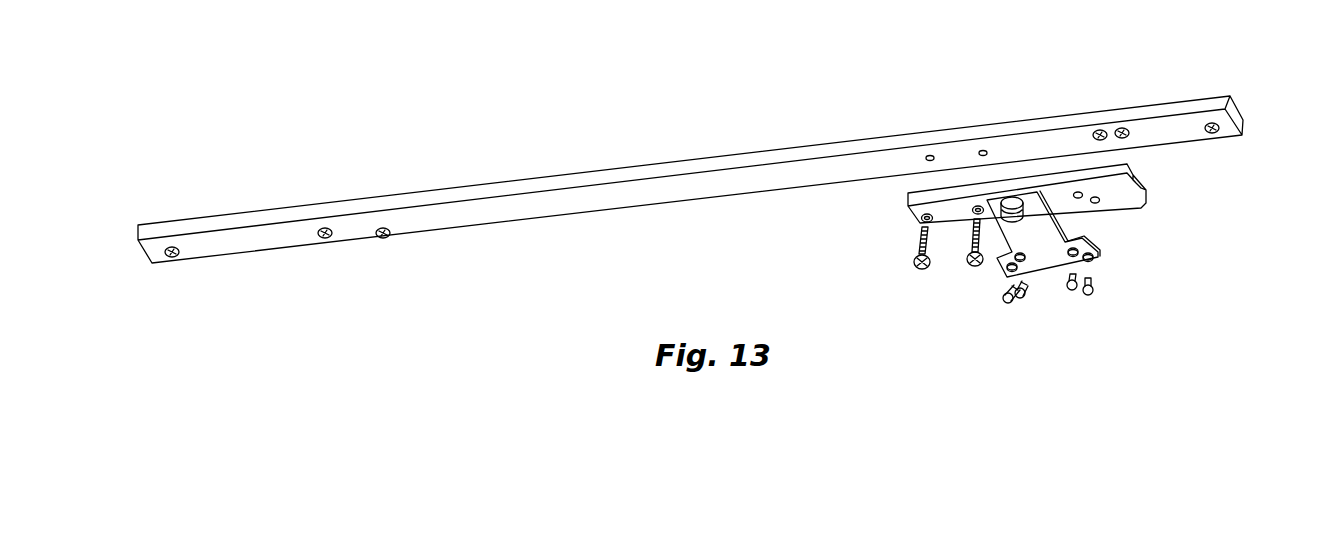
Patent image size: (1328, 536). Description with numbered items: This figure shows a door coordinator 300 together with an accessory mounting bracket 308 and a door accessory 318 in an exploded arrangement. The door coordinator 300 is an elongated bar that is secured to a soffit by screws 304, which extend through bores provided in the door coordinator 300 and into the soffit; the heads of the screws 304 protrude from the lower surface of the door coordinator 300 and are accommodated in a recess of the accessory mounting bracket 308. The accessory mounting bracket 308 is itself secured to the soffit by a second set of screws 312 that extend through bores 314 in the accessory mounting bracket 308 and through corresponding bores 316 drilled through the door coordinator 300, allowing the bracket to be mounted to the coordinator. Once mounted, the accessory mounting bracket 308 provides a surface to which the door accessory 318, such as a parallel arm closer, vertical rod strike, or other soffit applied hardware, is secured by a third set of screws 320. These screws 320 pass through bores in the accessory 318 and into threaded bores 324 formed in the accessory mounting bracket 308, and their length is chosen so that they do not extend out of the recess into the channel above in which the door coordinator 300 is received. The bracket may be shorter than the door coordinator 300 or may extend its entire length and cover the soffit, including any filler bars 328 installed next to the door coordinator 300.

The door coordinator 300 is at (721, 204).
The screws 304 is at (383, 231).
The accessory mounting bracket 308 is at (1098, 208).
The second set of screws 312 is at (913, 258).
The bores 314 is at (915, 226).
The bores 316 is at (928, 156).
The door accessory 318 is at (1043, 280).
The third set of screws 320 is at (1085, 295).
The threaded bores 324 is at (1135, 210).
The filler bars 328 is at (240, 222).